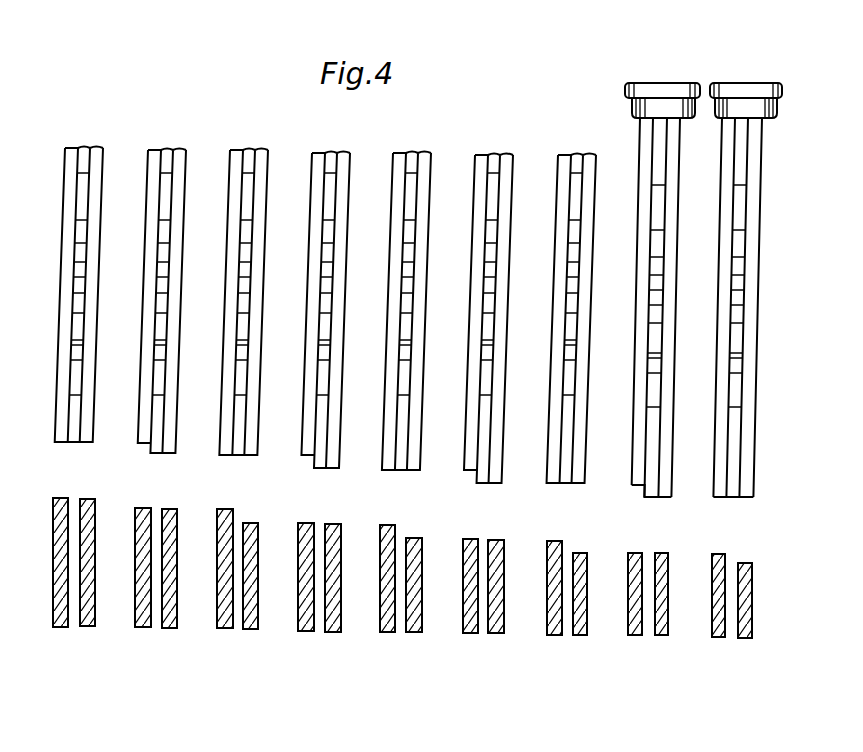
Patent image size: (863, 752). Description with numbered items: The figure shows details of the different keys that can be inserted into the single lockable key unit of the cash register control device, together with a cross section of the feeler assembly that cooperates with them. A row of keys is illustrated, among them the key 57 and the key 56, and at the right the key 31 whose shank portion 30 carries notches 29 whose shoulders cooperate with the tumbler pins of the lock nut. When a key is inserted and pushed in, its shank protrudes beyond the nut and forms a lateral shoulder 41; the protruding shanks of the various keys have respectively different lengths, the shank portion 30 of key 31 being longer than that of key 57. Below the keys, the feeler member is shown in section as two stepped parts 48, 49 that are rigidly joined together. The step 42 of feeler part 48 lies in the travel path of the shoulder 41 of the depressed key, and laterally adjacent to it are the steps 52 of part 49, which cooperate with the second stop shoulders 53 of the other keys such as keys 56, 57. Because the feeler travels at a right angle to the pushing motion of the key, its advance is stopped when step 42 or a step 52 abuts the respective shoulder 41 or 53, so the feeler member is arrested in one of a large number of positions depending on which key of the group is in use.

The key 57 is at (97, 173).
The key 56 is at (625, 90).
The key 31 is at (782, 90).
The shank portion 30 is at (753, 197).
The notches 29 is at (737, 295).
The shoulder 41 is at (716, 497).
The step 42 is at (725, 562).
The feeler part 48 is at (718, 637).
The feeler part 49 is at (745, 638).
The steps 52 is at (668, 553).
The second stop shoulders 53 is at (663, 485).